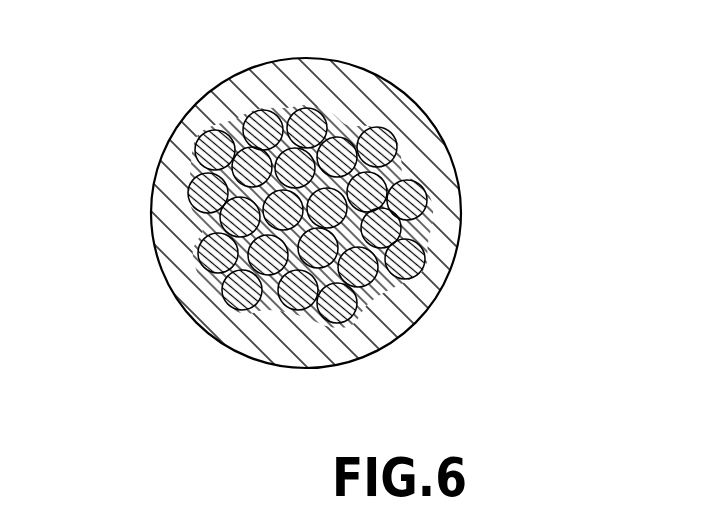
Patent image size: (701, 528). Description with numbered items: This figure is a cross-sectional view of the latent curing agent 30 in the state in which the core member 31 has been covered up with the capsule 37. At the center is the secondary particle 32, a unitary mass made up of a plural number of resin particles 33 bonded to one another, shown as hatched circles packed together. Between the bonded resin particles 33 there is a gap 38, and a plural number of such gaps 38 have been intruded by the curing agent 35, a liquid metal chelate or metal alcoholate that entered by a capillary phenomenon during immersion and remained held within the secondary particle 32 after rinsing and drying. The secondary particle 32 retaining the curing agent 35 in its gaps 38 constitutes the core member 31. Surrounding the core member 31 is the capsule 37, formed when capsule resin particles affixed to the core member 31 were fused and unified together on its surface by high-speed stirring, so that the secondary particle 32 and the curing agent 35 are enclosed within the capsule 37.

The latent curing agent 30 is at (163, 108).
The core member 31 is at (562, 147).
The secondary particle 32 is at (403, 128).
The resin particles 33 is at (408, 201).
The curing agent 35 is at (418, 270).
The capsule 37 is at (407, 303).
The gap 38 is at (354, 231).